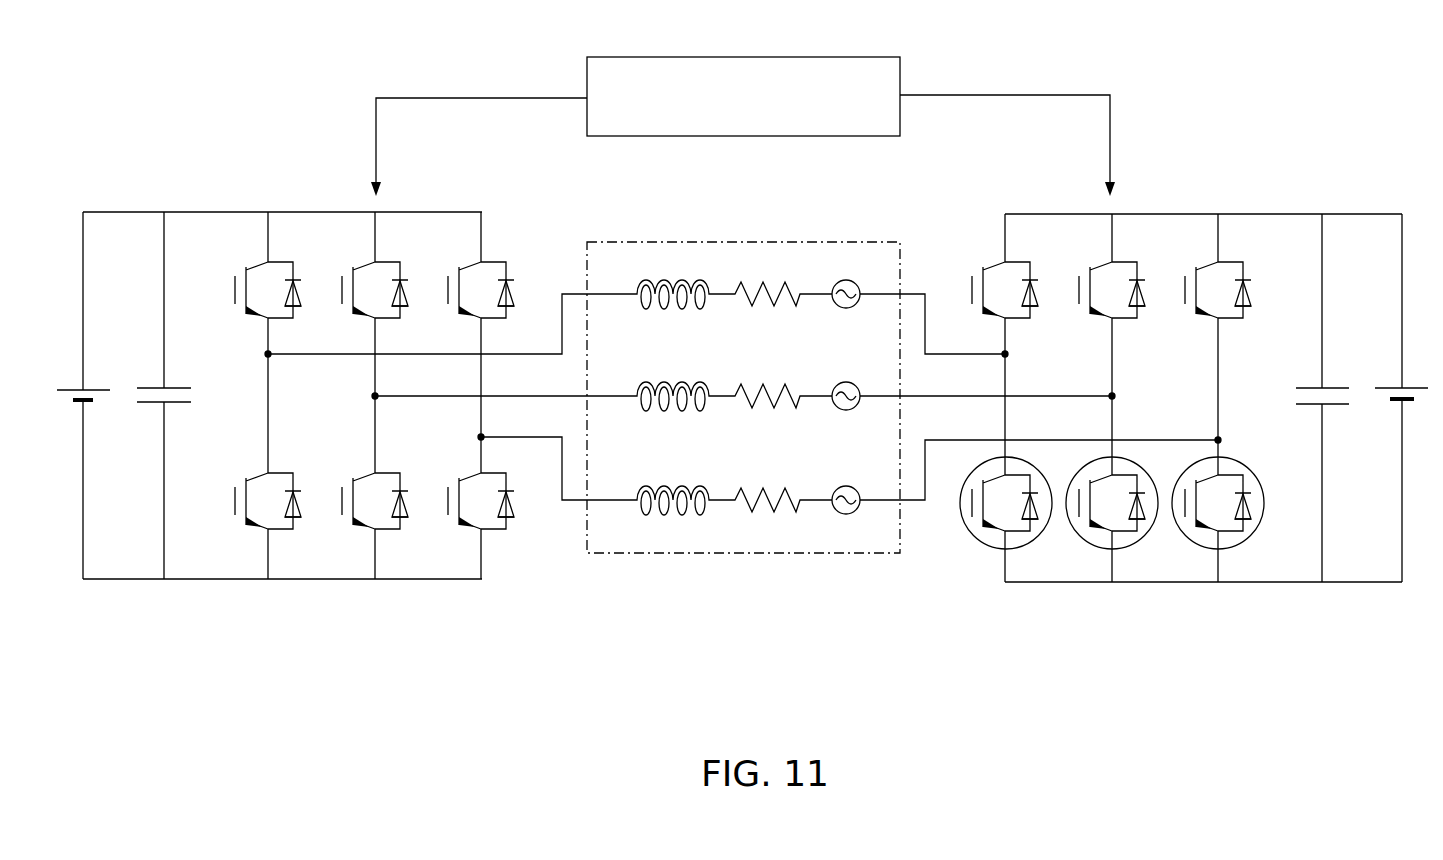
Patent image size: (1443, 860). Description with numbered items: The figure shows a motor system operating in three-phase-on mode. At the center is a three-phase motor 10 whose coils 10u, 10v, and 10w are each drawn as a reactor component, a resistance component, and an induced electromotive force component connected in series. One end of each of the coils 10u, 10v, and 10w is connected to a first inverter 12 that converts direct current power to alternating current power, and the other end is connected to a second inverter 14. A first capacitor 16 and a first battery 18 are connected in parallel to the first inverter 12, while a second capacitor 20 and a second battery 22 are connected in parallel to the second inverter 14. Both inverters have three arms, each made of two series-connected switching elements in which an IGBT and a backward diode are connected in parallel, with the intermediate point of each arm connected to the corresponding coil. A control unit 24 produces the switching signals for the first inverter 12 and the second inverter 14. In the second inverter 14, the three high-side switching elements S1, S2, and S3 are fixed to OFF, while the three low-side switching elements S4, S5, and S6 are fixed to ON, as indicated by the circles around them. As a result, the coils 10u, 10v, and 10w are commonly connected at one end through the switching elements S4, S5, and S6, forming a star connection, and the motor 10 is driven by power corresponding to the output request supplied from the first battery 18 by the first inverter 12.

The motor 10 is at (743, 449).
The u-phase coil 10u is at (729, 266).
The v-phase coil 10v is at (731, 373).
The w-phase coil 10w is at (739, 477).
The first inverter 12 is at (328, 188).
The second inverter 14 is at (1151, 319).
The first capacitor 16 is at (172, 389).
The first battery 18 is at (92, 389).
The second capacitor 20 is at (1313, 385).
The second battery 22 is at (1393, 385).
The control unit 24 is at (903, 79).
The switching element S1 is at (1012, 277).
The switching element S2 is at (1118, 277).
The switching element S3 is at (1224, 277).
The switching element S4 is at (1007, 499).
The switching element S5 is at (1114, 499).
The switching element S6 is at (1220, 499).